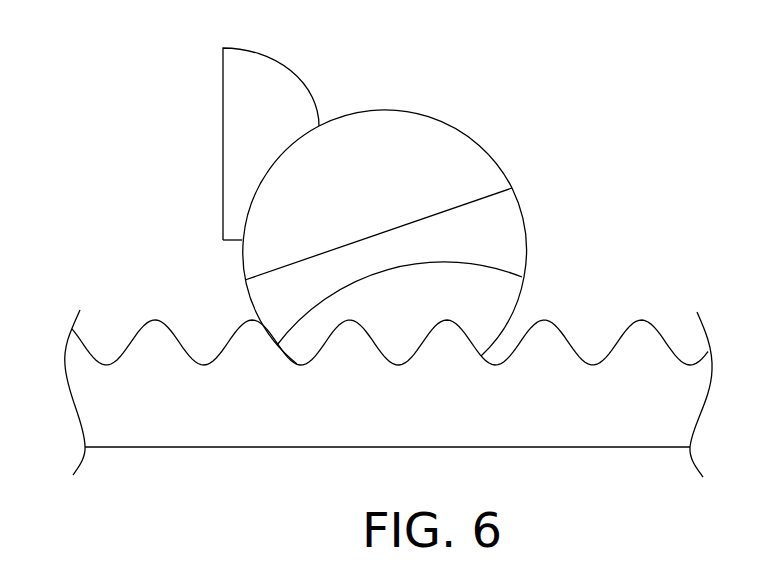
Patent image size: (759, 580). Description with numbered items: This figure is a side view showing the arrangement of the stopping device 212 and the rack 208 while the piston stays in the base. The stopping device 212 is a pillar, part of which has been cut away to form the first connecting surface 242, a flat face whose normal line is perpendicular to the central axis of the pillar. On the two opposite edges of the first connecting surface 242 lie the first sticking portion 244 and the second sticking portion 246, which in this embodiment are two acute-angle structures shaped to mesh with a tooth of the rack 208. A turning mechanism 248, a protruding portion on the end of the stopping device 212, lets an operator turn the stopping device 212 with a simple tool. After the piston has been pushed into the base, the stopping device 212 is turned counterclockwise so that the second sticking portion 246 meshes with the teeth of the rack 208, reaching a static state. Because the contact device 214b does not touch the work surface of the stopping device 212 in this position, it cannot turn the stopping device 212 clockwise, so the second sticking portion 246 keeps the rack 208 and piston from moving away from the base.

The rack 208 is at (310, 417).
The contact device 214b is at (240, 105).
The stopping device 212 is at (378, 110).
The turning mechanism 248 is at (440, 128).
The first sticking portion 244 is at (517, 240).
The second sticking portion 246 is at (265, 296).
The first connecting surface 242 is at (390, 270).